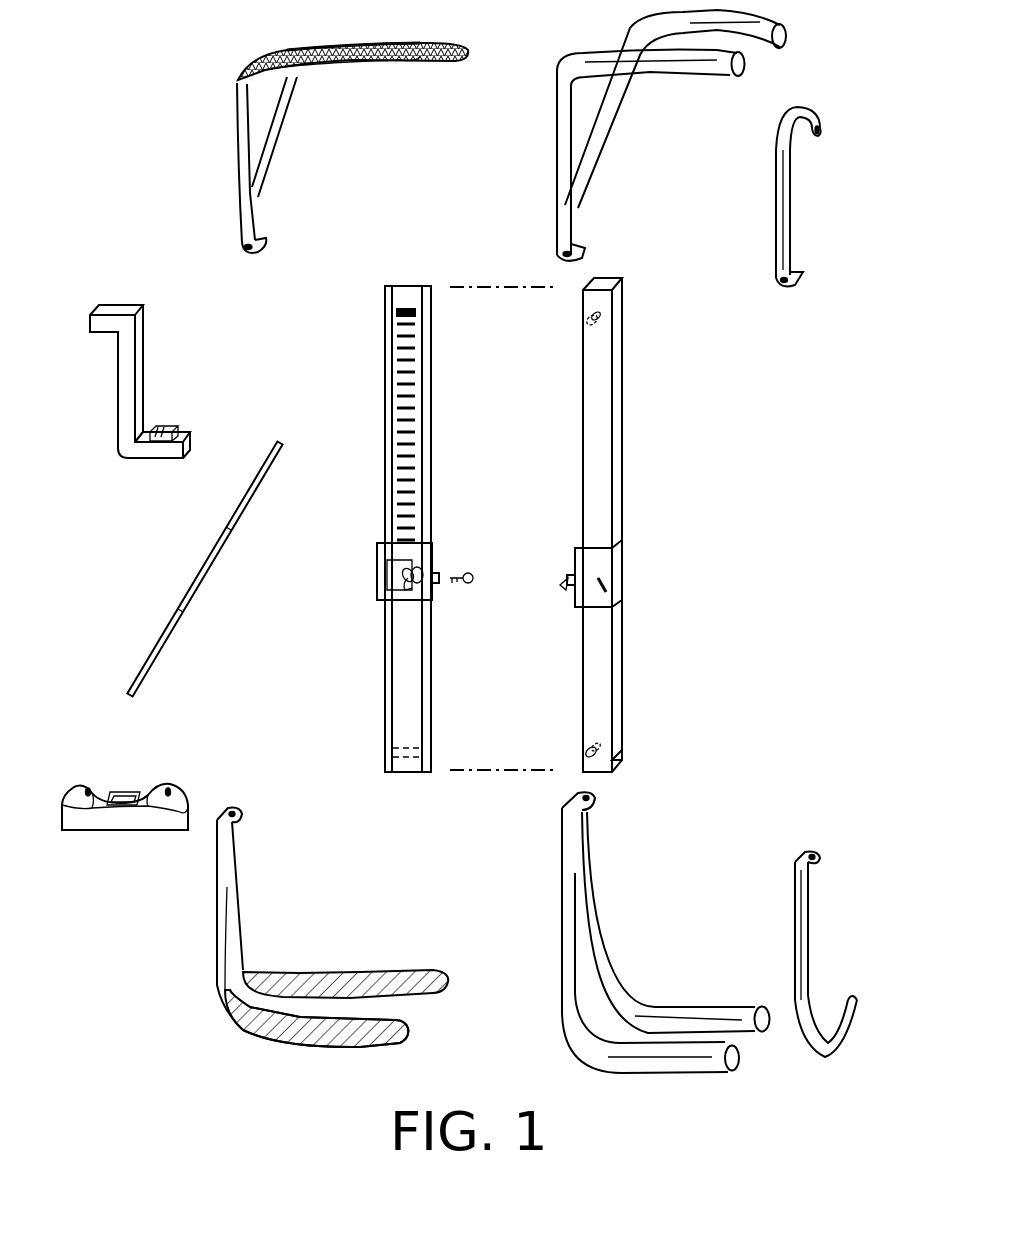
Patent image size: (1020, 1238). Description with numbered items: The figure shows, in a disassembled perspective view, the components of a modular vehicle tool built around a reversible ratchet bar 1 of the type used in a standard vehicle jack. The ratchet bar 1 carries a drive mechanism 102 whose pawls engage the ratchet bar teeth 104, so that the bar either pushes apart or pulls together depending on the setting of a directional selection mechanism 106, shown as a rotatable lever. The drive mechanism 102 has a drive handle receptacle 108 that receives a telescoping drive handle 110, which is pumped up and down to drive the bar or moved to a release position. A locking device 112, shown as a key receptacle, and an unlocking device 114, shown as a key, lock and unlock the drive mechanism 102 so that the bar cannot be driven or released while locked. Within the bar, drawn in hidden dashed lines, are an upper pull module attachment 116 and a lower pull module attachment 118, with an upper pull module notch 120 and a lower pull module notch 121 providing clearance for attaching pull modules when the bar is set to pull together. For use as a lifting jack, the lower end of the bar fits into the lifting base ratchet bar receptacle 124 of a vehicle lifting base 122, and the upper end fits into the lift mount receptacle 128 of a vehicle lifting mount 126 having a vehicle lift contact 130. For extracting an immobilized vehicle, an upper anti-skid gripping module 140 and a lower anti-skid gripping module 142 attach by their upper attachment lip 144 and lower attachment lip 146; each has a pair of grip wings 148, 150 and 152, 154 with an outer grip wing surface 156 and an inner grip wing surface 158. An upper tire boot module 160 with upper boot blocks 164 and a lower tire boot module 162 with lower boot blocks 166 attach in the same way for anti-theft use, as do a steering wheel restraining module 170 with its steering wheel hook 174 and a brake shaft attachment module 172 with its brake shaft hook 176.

The ratchet bar 1 is at (655, 480).
The drive mechanism 102 is at (592, 548).
The ratchet bar teeth 104 is at (410, 440).
The directional selection mechanism 106 is at (582, 562).
The drive handle receptacle 108 is at (565, 590).
The drive handle 110 is at (210, 558).
The locking device 112 is at (425, 568).
The unlocking device 114 is at (472, 576).
The upper ratchet bar pull module attachment 116 is at (588, 320).
The lower ratchet bar pull module attachment 118 is at (587, 750).
The upper pull module notch 120 is at (615, 288).
The lower pull module notch 121 is at (618, 765).
The vehicle lifting base 122 is at (112, 850).
The lifting base ratchet bar receptacle 124 is at (124, 790).
The vehicle lifting mount 126 is at (170, 335).
The lift mount receptacle 128 is at (103, 332).
The vehicle lift contact 130 is at (168, 428).
The upper anti-skid tire gripping module 140 is at (340, 90).
The lower anti-skid tire gripping module 142 is at (305, 960).
The upper pull module attachment 144 is at (257, 240).
The lower pull module attachment 146 is at (242, 812).
The grip wing 148 is at (468, 56).
The grip wing 150 is at (400, 66).
The grip wing 152 is at (448, 980).
The grip wing 154 is at (405, 1040).
The outer grip wing surface 156 is at (440, 48).
The inner grip wing surface 158 is at (420, 982).
The upper tire boot module 160 is at (623, 130).
The lower tire boot module 162 is at (628, 958).
The upper boot blocks 164 is at (730, 40).
The lower boot blocks 166 is at (660, 1055).
The steering wheel restraining module 170 is at (800, 172).
The brake shaft attachment module 172 is at (825, 980).
The steering wheel hook 174 is at (820, 118).
The brake shaft hook 176 is at (855, 1030).